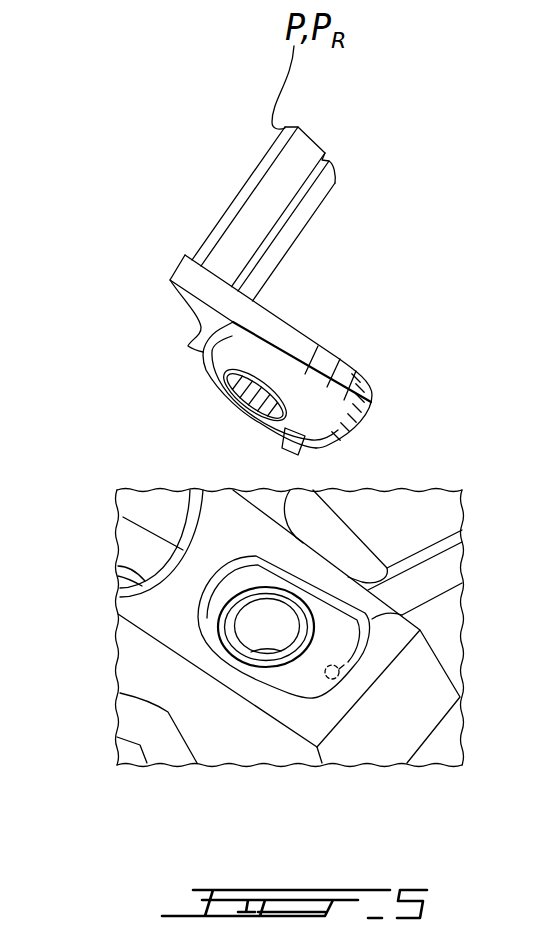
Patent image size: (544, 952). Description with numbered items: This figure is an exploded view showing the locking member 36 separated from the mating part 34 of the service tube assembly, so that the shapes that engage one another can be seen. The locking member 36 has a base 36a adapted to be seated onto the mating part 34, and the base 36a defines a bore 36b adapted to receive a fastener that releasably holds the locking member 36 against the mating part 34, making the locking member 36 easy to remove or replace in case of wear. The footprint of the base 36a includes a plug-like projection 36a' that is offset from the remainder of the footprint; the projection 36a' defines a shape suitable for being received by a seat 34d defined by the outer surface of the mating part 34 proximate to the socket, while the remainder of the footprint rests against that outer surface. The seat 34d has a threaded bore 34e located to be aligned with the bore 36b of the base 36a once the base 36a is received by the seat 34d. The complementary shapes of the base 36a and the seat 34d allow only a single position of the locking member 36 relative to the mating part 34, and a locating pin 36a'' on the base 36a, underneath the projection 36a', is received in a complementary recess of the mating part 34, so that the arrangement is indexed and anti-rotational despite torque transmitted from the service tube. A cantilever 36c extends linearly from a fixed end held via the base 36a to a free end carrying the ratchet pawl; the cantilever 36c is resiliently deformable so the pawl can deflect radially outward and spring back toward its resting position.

The locking member 36 is at (160, 155).
The base 36a is at (295, 365).
The plug-like projection 36a' is at (396, 407).
The locating pin 36a'' is at (243, 452).
The bore 36b is at (238, 388).
The cantilever 36c is at (293, 232).
The mating part 34 is at (88, 535).
The seat 34d is at (382, 637).
The threaded bore 34e is at (232, 638).